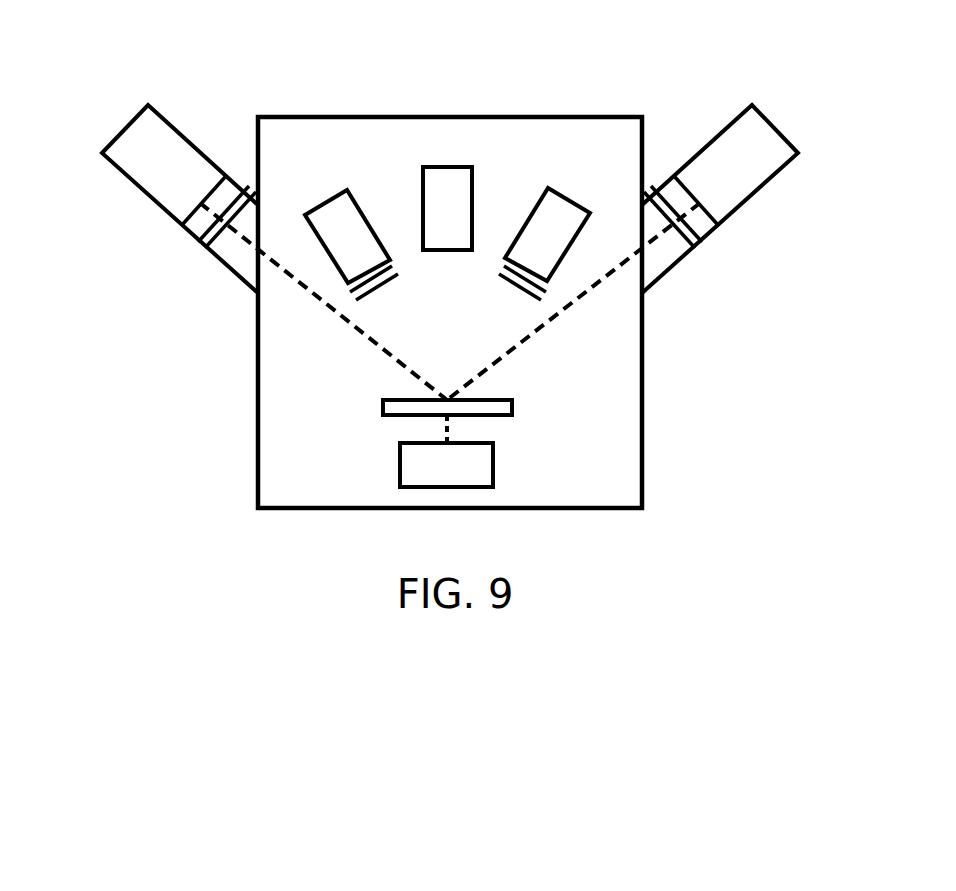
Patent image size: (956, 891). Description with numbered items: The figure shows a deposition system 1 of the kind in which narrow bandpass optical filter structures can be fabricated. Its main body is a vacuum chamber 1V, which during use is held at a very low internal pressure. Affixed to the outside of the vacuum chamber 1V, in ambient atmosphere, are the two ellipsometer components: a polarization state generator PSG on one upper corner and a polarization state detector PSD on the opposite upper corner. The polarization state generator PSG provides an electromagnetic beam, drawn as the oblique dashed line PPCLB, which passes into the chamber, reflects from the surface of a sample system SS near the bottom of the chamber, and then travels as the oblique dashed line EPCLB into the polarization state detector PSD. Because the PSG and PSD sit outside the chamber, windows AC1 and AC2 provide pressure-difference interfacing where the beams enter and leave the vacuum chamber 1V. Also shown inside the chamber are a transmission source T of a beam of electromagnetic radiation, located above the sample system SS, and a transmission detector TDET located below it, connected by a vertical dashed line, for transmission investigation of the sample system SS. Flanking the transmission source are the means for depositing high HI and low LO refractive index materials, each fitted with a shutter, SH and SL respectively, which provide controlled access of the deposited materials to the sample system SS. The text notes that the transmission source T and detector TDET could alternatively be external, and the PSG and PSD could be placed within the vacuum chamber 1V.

The deposition system 1 is at (592, 43).
The vacuum chamber 1V is at (648, 138).
The polarization state generator PSG is at (180, 199).
The polarization state detector PSD is at (720, 199).
The window AC1 is at (197, 247).
The window AC2 is at (707, 250).
The oblique angled dashed line beam from PSG PPCLB is at (343, 317).
The oblique angled dashed line beam to PSD EPCLB is at (567, 310).
The means for depositing high refractive index material HI is at (347, 236).
The means for depositing low refractive index material LO is at (547, 234).
The shutter SH is at (379, 287).
The shutter SL is at (518, 287).
The transmission source T is at (447, 208).
The sample system SS is at (480, 417).
The transmission detector TDET is at (446, 451).